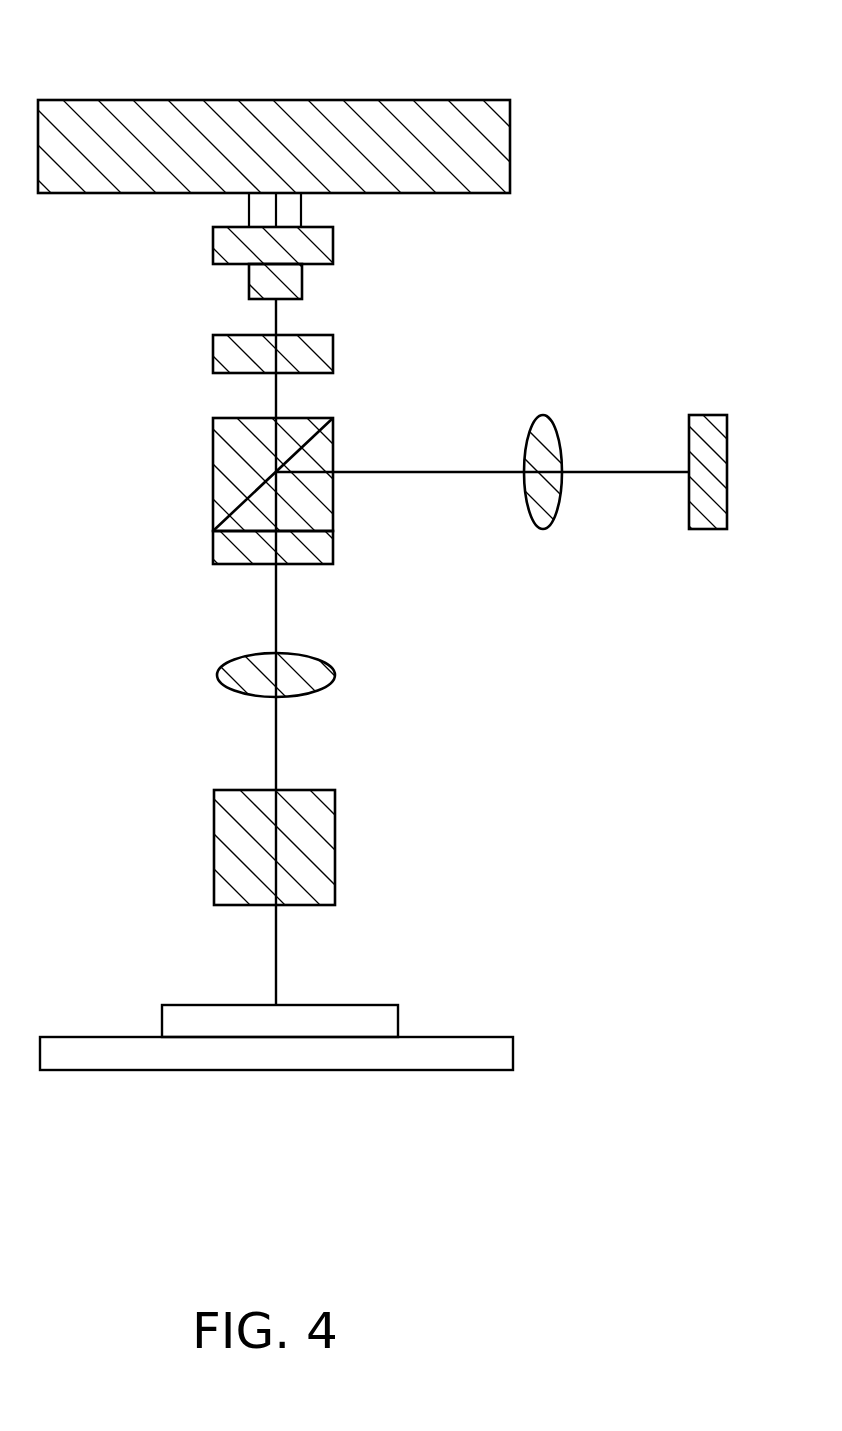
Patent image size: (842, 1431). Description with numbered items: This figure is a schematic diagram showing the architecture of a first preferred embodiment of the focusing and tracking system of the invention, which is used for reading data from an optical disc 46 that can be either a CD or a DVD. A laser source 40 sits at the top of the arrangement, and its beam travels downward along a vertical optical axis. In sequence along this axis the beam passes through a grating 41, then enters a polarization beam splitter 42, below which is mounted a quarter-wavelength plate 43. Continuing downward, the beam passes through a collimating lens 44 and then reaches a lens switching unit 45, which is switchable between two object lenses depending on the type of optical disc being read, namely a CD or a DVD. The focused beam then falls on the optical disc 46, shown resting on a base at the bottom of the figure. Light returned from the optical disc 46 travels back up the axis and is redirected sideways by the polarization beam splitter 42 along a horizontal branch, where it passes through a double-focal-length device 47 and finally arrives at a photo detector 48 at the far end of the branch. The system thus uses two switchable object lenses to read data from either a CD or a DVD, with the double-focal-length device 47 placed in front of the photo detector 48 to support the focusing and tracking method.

The laser source 40 is at (348, 152).
The grating 41 is at (250, 347).
The polarization beam splitter 42 is at (235, 466).
The λ/4 plate 43 is at (252, 545).
The collimating lens 44 is at (303, 673).
The lens switching unit 45 is at (305, 843).
The optical disc 46 is at (348, 1025).
The double-focal-length device 47 is at (540, 457).
The photo detector 48 is at (703, 448).